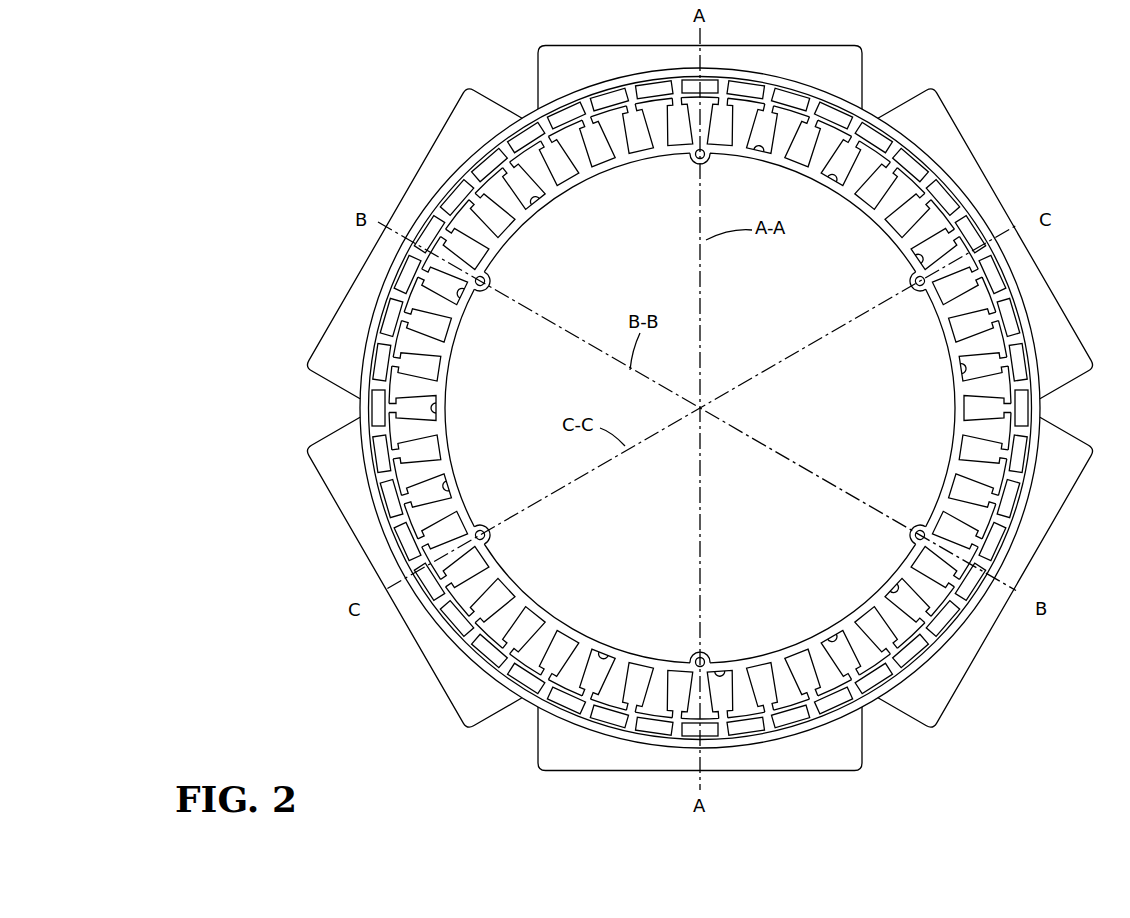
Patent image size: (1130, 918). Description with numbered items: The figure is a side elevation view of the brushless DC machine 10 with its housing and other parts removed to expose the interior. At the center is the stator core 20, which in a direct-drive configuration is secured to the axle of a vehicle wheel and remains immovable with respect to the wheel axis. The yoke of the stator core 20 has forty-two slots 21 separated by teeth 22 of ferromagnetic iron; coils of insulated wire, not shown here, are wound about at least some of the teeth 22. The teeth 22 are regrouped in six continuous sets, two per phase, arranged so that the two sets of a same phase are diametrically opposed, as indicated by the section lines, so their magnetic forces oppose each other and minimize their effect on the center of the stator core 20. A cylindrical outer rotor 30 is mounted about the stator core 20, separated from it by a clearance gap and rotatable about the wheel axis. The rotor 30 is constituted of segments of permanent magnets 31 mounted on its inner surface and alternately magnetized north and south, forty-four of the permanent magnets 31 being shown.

The brushless DC machine 10 is at (655, 427).
The stator core 20 is at (699, 408).
The slots 21 is at (838, 173).
The teeth 22 is at (658, 138).
The outer rotor 30 is at (668, 427).
The permanent magnets 31 is at (1003, 282).